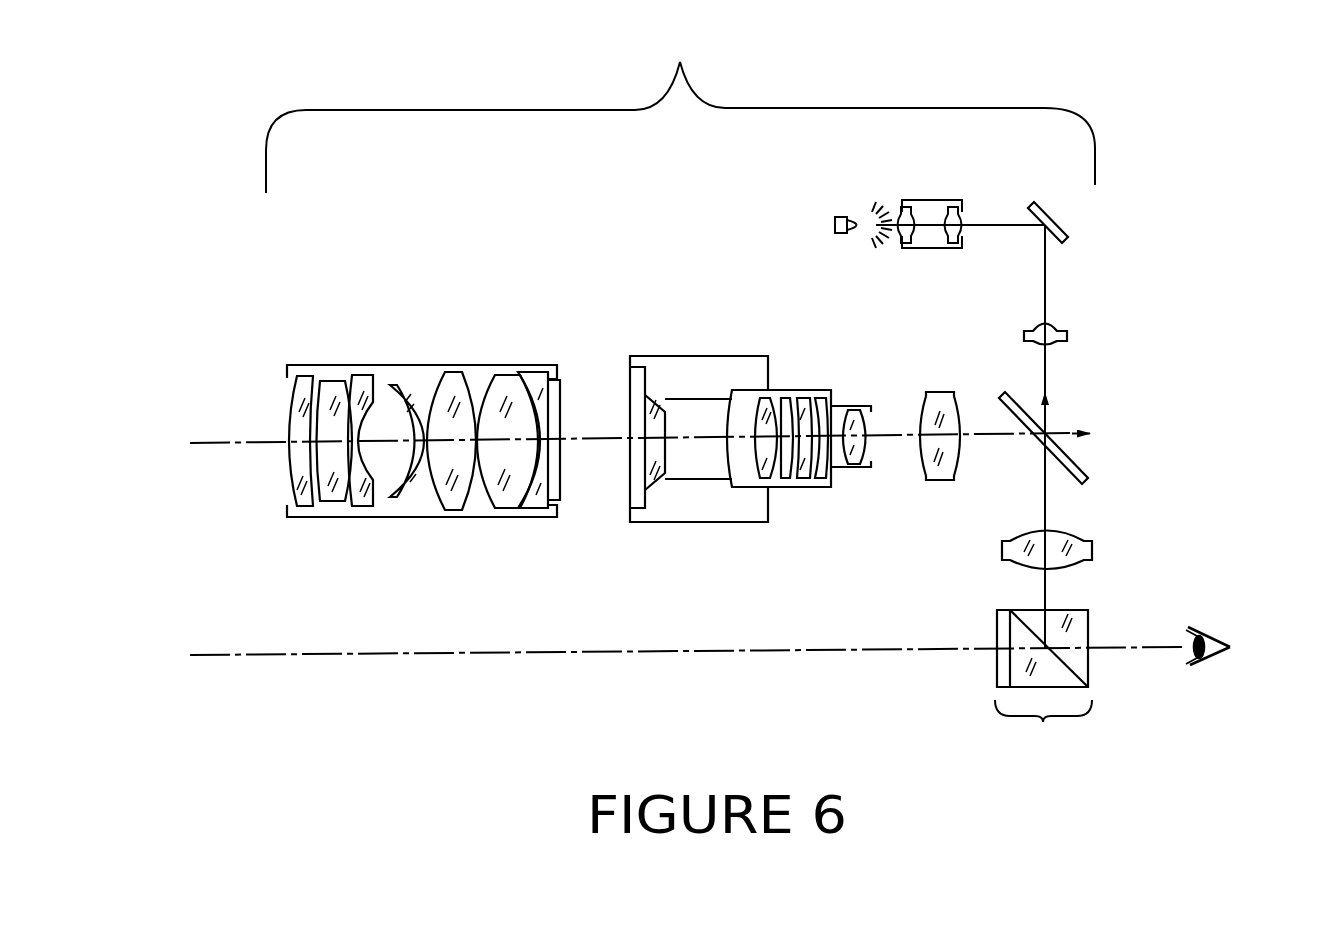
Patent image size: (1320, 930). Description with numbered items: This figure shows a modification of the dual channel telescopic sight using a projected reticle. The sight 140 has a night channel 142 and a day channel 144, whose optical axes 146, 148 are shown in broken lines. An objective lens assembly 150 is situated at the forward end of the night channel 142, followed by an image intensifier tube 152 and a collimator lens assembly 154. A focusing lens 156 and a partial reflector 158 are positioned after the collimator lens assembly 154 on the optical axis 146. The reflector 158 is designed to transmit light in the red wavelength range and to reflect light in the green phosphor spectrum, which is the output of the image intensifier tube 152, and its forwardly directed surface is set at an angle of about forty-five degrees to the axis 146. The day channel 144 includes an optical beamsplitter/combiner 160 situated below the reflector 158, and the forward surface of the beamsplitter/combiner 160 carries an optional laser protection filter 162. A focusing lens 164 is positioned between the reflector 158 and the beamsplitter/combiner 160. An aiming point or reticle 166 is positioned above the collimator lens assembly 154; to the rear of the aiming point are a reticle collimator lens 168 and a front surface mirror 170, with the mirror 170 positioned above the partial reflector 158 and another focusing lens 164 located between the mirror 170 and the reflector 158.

The sight 140 is at (1120, 92).
The night channel 142 is at (680, 111).
The day channel 144 is at (1043, 726).
The optical axis 146 is at (208, 443).
The optical axis 148 is at (208, 657).
The objective lens assembly 150 is at (422, 367).
The image intensifier tube 152 is at (715, 357).
The collimator lens assembly 154 is at (797, 388).
The focusing lens 156 is at (946, 392).
The partial reflector 158 is at (1088, 470).
The optical beamsplitter/combiner 160 is at (1088, 627).
The laser protection filter 162 is at (996, 665).
The focusing lens 164 is at (1060, 318).
The aiming point or reticle 166 is at (840, 212).
The reticle collimator lens 168 is at (933, 197).
The front surface mirror 170 is at (1067, 232).